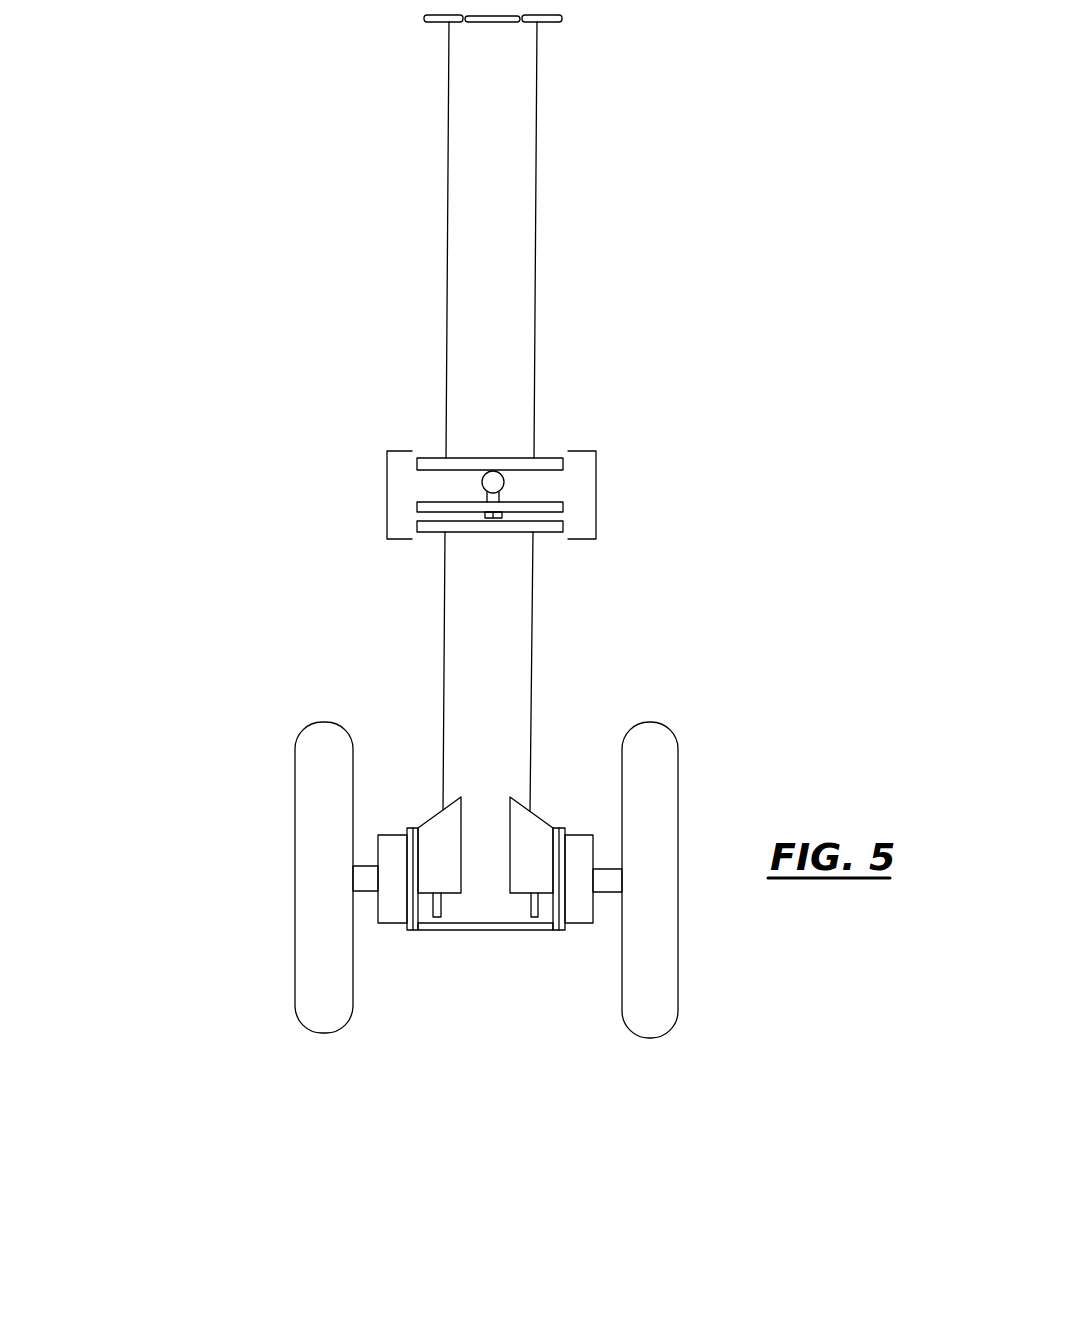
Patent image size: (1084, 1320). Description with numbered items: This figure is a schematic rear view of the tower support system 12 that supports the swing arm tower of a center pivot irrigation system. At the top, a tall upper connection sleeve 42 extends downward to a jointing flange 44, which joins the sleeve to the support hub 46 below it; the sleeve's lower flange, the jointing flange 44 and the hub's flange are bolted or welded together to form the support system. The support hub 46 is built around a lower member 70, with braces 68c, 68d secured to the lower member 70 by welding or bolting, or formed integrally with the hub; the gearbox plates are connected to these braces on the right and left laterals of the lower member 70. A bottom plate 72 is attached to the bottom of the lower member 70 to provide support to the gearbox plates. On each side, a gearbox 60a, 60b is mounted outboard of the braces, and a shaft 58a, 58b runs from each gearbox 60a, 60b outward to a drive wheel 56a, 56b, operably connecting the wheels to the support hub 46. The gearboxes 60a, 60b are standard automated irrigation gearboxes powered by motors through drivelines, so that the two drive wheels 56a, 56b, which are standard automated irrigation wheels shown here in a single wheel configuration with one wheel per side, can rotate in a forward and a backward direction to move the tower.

The tower support system 12 is at (502, 609).
The upper connection sleeve 42 is at (482, 264).
The jointing flange 44 is at (428, 507).
The support hub 46 is at (487, 851).
The lower member 70 is at (475, 652).
The brace 68c is at (520, 823).
The brace 68d is at (450, 823).
The bottom plate 72 is at (477, 928).
The gearbox 60a is at (578, 905).
The gearbox 60b is at (393, 890).
The shaft 58a is at (608, 877).
The shaft 58b is at (365, 878).
The drive wheel 56a is at (653, 817).
The drive wheel 56b is at (315, 818).